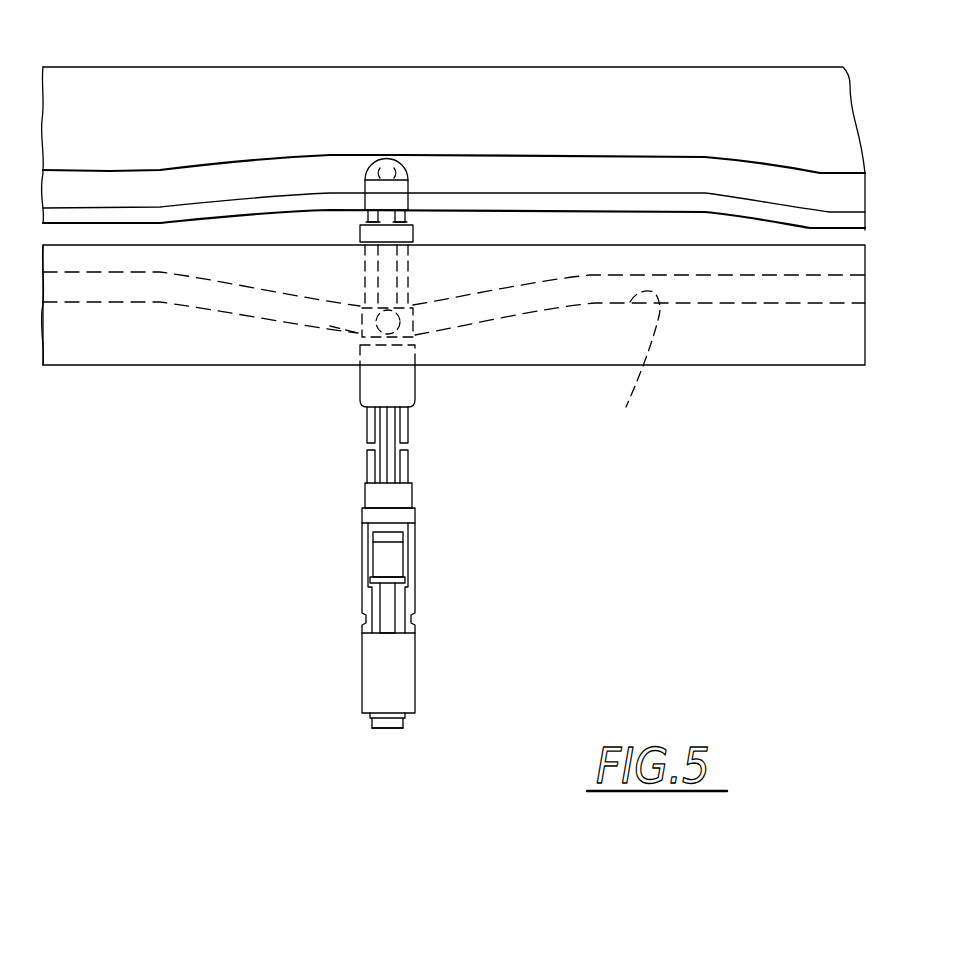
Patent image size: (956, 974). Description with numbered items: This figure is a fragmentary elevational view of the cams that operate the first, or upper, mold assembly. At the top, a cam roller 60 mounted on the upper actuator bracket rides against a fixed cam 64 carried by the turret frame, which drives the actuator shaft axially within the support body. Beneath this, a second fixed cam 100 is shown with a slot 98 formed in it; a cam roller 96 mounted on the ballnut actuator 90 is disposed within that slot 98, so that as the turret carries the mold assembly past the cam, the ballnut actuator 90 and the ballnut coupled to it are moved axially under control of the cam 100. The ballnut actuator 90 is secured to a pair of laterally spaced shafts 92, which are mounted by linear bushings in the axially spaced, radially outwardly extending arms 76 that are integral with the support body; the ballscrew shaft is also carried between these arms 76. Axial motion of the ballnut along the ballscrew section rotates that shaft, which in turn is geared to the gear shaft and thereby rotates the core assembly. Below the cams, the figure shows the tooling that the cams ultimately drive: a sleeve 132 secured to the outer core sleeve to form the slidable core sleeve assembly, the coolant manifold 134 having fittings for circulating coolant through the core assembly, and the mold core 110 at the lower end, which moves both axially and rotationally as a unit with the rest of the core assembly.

The fixed cam 64 is at (772, 86).
The cam 100 is at (763, 357).
The cam roller 60 is at (405, 158).
The laterally spaced shafts 92 is at (370, 267).
The ballnut actuator 90 is at (408, 307).
The cam roller 96 is at (357, 328).
The slot 98 is at (631, 368).
The arms 76 is at (412, 390).
The sleeve 132 is at (410, 598).
The coolant manifold 134 is at (400, 558).
The mold core 110 is at (392, 728).